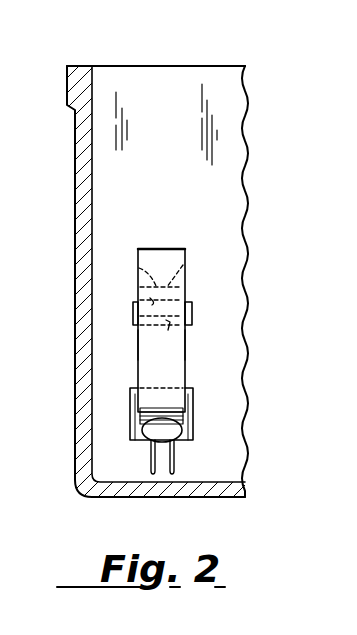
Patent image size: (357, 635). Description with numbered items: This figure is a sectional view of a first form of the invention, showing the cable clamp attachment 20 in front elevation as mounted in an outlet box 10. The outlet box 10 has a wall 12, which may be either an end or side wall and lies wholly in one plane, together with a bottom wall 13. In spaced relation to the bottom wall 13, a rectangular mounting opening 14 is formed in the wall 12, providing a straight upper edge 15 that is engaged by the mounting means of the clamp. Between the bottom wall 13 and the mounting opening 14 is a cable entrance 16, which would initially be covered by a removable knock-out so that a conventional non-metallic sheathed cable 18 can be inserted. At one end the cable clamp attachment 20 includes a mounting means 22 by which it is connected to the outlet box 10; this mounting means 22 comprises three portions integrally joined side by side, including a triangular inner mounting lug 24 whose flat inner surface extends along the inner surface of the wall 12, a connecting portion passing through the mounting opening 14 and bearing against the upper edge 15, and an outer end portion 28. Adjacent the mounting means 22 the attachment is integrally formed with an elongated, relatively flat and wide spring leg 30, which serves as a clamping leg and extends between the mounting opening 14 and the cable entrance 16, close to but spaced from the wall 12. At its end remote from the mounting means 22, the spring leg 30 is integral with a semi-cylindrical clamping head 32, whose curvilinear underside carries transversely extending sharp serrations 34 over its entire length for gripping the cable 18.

The outlet box 10 is at (208, 62).
The wall 12 is at (150, 66).
The bottom wall 13 is at (91, 497).
The mounting opening 14 is at (133, 312).
The upper edge 15 is at (138, 270).
The cable entrance 16 is at (147, 392).
The sheathed cable 18 is at (180, 410).
The cable clamp attachment 20 is at (189, 373).
The mounting means 22 is at (161, 247).
The inner mounting lug 24 is at (188, 337).
The outer end portion 28 is at (186, 268).
The spring leg 30 is at (138, 342).
The clamping head 32 is at (170, 412).
The serrations 34 is at (142, 428).